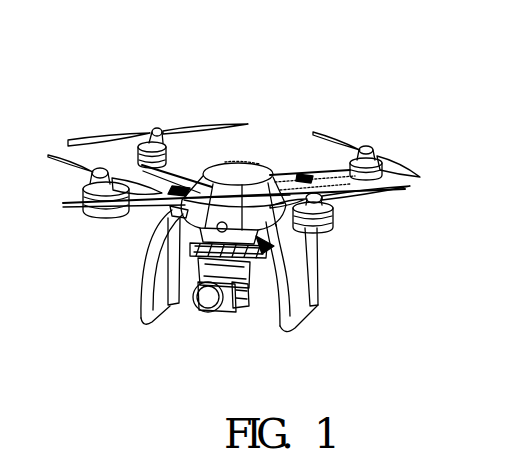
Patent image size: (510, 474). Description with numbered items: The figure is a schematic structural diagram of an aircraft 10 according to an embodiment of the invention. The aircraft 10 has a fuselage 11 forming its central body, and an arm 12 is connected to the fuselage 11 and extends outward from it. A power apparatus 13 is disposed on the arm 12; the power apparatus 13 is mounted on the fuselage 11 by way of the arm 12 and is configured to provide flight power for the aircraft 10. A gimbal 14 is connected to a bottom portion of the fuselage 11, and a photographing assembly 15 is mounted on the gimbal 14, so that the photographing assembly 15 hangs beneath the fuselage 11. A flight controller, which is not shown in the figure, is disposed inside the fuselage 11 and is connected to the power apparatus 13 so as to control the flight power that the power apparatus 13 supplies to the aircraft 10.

The aircraft 10 is at (264, 211).
The fuselage 11 is at (250, 142).
The arm 12 is at (360, 212).
The power apparatus 13 is at (405, 140).
The gimbal 14 is at (278, 269).
The photographing assembly 15 is at (240, 336).